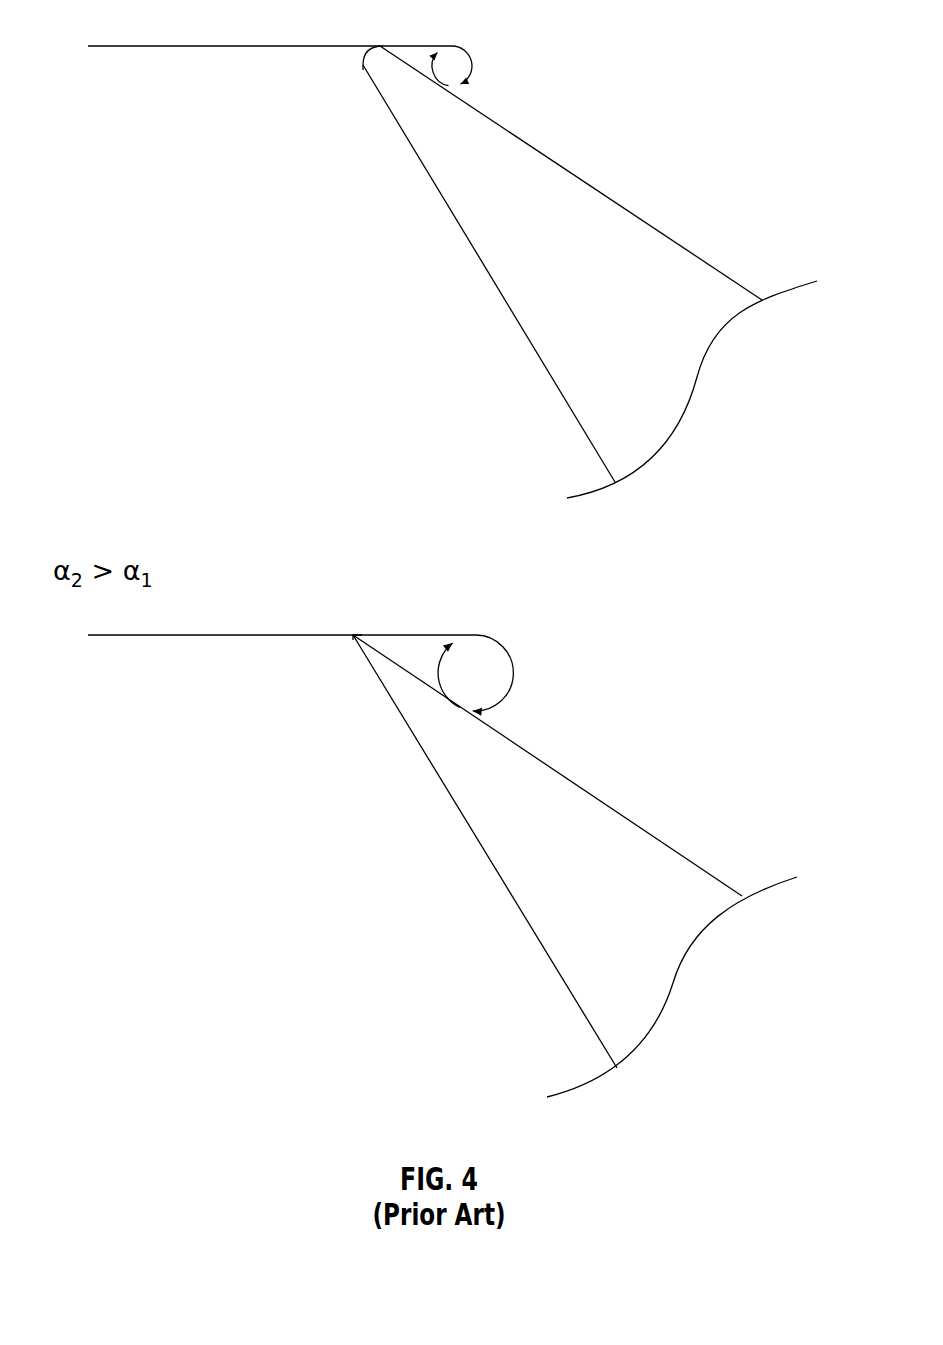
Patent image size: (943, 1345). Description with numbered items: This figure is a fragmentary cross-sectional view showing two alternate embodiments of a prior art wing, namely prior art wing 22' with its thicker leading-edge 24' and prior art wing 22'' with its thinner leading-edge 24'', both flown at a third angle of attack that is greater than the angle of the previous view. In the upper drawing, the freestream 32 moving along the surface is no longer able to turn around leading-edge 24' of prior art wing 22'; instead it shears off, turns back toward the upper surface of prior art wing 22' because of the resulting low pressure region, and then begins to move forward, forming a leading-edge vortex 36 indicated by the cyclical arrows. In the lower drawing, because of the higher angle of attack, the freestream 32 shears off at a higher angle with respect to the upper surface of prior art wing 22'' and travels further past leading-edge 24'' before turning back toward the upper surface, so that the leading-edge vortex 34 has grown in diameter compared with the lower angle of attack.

The freestream 32 is at (228, 47).
The leading-edge 24' is at (344, 87).
The prior art wing 22' is at (590, 272).
The leading-edge vortex 36 is at (457, 58).
The leading-edge 24'' is at (323, 675).
The prior art wing 22'' is at (575, 866).
The leading-edge vortex 34 is at (492, 662).